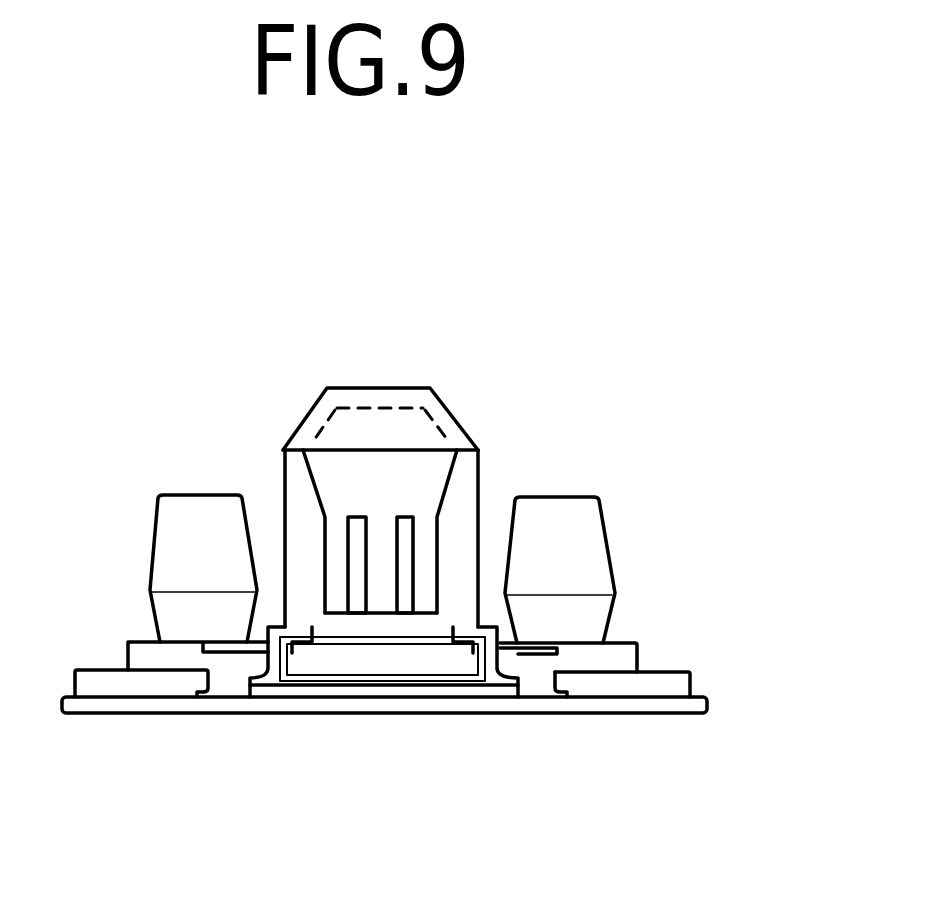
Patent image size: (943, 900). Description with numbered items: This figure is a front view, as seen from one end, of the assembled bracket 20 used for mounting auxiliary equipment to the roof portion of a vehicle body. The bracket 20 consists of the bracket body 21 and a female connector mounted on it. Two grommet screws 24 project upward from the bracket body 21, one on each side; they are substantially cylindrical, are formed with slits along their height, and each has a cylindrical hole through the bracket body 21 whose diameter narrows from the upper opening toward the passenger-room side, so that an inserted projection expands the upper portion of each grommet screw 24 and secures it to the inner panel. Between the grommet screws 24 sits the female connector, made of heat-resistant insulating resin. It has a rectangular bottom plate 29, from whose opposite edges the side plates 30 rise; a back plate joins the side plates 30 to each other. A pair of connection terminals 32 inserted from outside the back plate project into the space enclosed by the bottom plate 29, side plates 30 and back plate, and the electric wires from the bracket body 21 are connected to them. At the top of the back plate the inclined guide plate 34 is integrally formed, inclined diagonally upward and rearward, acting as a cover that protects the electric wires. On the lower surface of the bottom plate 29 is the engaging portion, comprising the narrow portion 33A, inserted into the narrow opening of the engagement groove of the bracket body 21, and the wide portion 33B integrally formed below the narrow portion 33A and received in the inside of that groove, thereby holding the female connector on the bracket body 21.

The bracket 20 is at (667, 493).
The bracket body 21 is at (713, 678).
The grommet screw 24 is at (172, 552).
The bottom plate 29 is at (420, 617).
The side plate 30 is at (297, 490).
The connection terminal 32 is at (403, 517).
The narrow portion 33A is at (360, 658).
The wide portion 33B is at (310, 665).
The inclined guide plate 34 is at (423, 425).